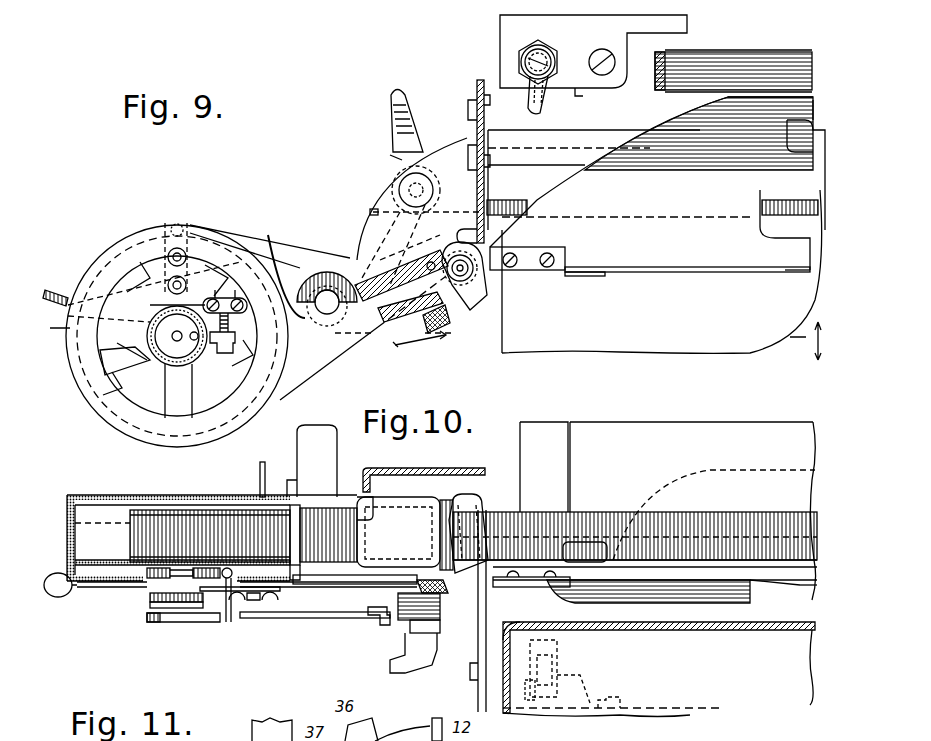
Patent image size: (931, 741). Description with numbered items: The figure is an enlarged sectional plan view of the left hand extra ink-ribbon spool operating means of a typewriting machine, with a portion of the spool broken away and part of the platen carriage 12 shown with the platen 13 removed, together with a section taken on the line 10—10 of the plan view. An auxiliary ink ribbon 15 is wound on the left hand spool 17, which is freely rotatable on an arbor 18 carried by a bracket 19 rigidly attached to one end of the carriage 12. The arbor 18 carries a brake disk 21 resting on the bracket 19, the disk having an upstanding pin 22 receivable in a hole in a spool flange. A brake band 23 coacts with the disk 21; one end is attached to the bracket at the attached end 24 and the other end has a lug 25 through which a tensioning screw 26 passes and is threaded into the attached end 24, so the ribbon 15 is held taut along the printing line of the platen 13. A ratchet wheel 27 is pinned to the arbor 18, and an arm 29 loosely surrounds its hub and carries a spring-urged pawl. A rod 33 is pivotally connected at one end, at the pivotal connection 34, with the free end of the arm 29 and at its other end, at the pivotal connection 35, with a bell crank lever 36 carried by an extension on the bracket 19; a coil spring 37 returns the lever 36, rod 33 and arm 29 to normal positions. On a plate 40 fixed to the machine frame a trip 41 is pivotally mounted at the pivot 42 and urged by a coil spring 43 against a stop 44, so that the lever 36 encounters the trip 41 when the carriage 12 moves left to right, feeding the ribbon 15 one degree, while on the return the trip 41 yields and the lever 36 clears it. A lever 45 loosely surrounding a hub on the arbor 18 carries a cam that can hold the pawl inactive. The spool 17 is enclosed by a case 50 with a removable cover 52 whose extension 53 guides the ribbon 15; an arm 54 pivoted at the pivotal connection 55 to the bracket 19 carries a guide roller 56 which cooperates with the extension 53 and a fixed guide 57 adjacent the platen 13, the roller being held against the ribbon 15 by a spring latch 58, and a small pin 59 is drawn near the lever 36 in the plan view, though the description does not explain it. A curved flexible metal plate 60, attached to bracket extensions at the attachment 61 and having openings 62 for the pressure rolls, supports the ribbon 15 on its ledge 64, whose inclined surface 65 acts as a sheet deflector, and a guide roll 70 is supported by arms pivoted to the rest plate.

In FIG. 9, the type bars 10 is at (432, 335).
In FIG. 9, the platen carriage 12 is at (477, 84).
In FIG. 10, the platen carriage 12 is at (466, 468).
In FIG. 9, the platen 13 is at (656, 236).
In FIG. 10, the platen 13 is at (684, 422).
In FIG. 9, the auxiliary or extra ink ribbon 15 is at (668, 273).
In FIG. 10, the auxiliary or extra ink ribbon 15 is at (714, 512).
In FIG. 9, the spool 17 is at (195, 410).
In FIG. 10, the spool 17 is at (133, 510).
In FIG. 9, the arbor 18 is at (177, 336).
In FIG. 9, the bracket 19 is at (272, 255).
In FIG. 10, the bracket 19 is at (318, 588).
In FIG. 9, the brake disk 21 is at (150, 338).
In FIG. 9, the upstanding pin 22 is at (195, 340).
In FIG. 9, the brake band 23 is at (152, 304).
In FIG. 10, the brake band 23 is at (150, 578).
In FIG. 9, the attached end of the band 24 is at (230, 295).
In FIG. 9, the lug 25 is at (235, 345).
In FIG. 9, the tensioning screw 26 is at (230, 322).
In FIG. 10, the tensioning screw 26 is at (229, 622).
In FIG. 9, the ratchet wheel 27 is at (150, 365).
In FIG. 10, the ratchet wheel 27 is at (150, 600).
In FIG. 9, the arm 29 is at (173, 224).
In FIG. 10, the arm 29 is at (190, 608).
In FIG. 9, the rod 33 is at (296, 262).
In FIG. 10, the rod 33 is at (350, 618).
In FIG. 9, the pivotal connection 34 is at (187, 228).
In FIG. 9, the pivotal connection 35 is at (360, 255).
In FIG. 10, the pivotal connection 35 is at (378, 625).
In FIG. 9, the bell crank lever 36 is at (393, 118).
In FIG. 10, the bell crank lever 36 is at (420, 670).
In FIG. 9, the coil spring 37 is at (390, 156).
In FIG. 10, the coil spring 37 is at (440, 610).
In FIG. 9, the plate 40 is at (592, 45).
In FIG. 10, the plate 40 is at (620, 700).
In FIG. 9, the trip 41 is at (538, 98).
In FIG. 10, the trip 41 is at (553, 665).
In FIG. 9, the pivot 42 is at (533, 50).
In FIG. 10, the pivot 42 is at (545, 645).
In FIG. 9, the coil spring 43 is at (528, 60).
In FIG. 10, the coil spring 43 is at (528, 705).
In FIG. 9, the stop 44 is at (583, 96).
In FIG. 10, the stop 44 is at (592, 690).
In FIG. 9, the lever 45 is at (56, 290).
In FIG. 10, the lever 45 is at (58, 597).
In FIG. 10, the box or case 50 is at (75, 545).
In FIG. 9, the cover 52 is at (296, 378).
In FIG. 10, the cover 52 is at (85, 496).
In FIG. 9, the extension 53 is at (372, 318).
In FIG. 10, the extension 53 is at (402, 520).
In FIG. 9, the arm 54 is at (395, 300).
In FIG. 10, the arm 54 is at (388, 575).
In FIG. 9, the pivotal connection 55 is at (327, 288).
In FIG. 10, the pivotal connection 55 is at (318, 566).
In FIG. 9, the guide roller 56 is at (470, 305).
In FIG. 10, the guide roller 56 is at (478, 504).
In FIG. 9, the fixed guide 57 is at (588, 277).
In FIG. 10, the fixed guide 57 is at (585, 540).
In FIG. 9, the spring latch 58 is at (428, 330).
In FIG. 10, the spring latch 58 is at (445, 590).
In FIG. 9, the pin 59 is at (431, 262).
In FIG. 9, the curved flexible metal plate 60 is at (672, 120).
In FIG. 10, the curved flexible metal plate 60 is at (690, 590).
In FIG. 9, the attachment 61 is at (535, 255).
In FIG. 10, the attachment 61 is at (520, 585).
In FIG. 9, the openings 62 is at (813, 125).
In FIG. 10, the openings 62 is at (770, 590).
In FIG. 9, the ledge 64 is at (797, 275).
In FIG. 10, the ledge 64 is at (820, 585).
In FIG. 10, the inclined surface 65 is at (740, 600).
In FIG. 9, the guide roll 70 is at (746, 60).